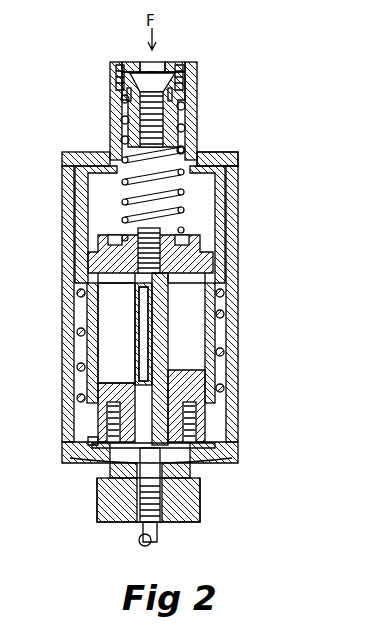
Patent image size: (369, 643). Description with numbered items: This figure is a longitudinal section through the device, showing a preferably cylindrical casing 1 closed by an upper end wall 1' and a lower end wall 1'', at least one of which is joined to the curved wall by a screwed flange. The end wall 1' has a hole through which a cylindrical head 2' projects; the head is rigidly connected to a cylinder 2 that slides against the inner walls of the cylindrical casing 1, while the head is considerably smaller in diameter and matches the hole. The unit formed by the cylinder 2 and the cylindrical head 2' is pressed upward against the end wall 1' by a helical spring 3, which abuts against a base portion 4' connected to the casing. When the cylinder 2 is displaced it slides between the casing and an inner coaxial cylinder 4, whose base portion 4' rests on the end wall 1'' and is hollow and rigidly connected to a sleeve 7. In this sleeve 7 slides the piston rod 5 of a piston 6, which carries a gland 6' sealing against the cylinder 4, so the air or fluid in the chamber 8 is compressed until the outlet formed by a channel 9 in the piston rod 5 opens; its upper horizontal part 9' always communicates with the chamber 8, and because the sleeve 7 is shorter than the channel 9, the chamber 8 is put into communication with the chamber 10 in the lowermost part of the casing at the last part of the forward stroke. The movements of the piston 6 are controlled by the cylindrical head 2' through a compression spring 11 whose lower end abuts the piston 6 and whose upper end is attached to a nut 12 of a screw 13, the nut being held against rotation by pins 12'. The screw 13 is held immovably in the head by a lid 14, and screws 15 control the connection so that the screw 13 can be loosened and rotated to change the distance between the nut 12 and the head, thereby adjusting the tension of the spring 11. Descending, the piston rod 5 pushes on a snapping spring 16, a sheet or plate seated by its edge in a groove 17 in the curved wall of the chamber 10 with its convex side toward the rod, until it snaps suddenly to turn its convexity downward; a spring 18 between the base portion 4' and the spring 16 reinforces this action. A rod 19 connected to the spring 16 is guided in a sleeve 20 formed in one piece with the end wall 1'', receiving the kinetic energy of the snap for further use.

The cylindrical casing 1 is at (148, 307).
The upper end wall 1' is at (239, 155).
The lower end wall 1'' is at (173, 500).
The cylinder 2 is at (152, 224).
The cylindrical head 2' is at (179, 109).
The helical spring 3 is at (78, 335).
The cylinder 4 is at (174, 343).
The base portion 4' is at (118, 406).
The piston rod 5 is at (166, 332).
The piston 6 is at (124, 254).
The gland 6' is at (119, 288).
The sleeve 7 is at (185, 372).
The chamber 8 is at (108, 313).
The channel 9 is at (163, 334).
The upper horizontal part 9' is at (130, 334).
The chamber 10 is at (208, 443).
The compression spring 11 is at (183, 192).
The nut 12 is at (182, 124).
The pins 12' is at (153, 95).
The screw 13 is at (140, 115).
The lid 14 is at (165, 70).
The screws 15 is at (128, 68).
The snapping spring 16 is at (98, 465).
The groove 17 is at (235, 467).
The spring 18 is at (96, 438).
The rod 19 is at (140, 460).
The sleeve 20 is at (116, 520).